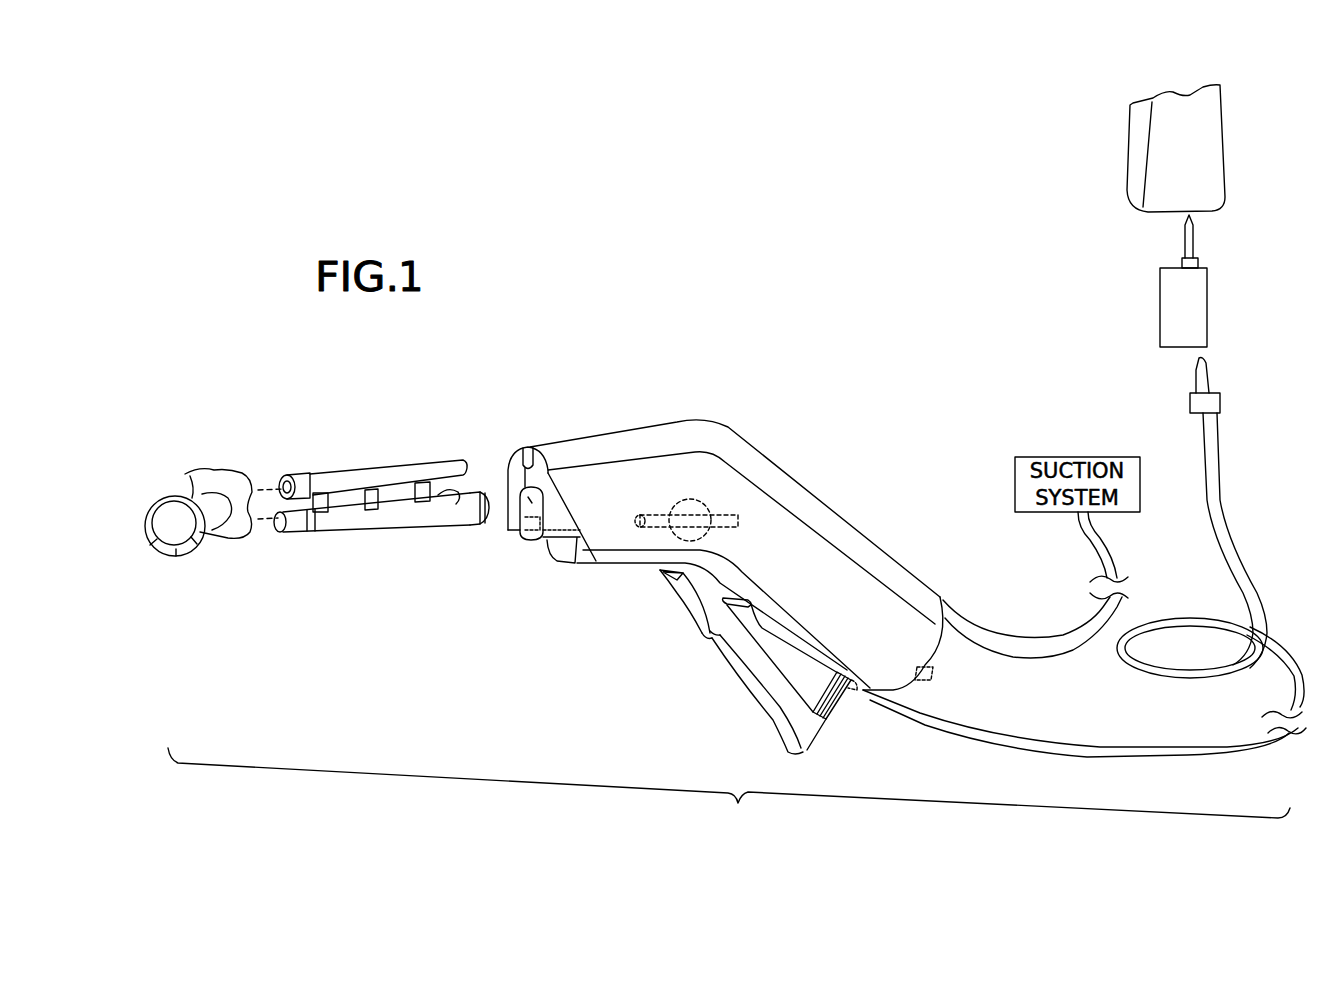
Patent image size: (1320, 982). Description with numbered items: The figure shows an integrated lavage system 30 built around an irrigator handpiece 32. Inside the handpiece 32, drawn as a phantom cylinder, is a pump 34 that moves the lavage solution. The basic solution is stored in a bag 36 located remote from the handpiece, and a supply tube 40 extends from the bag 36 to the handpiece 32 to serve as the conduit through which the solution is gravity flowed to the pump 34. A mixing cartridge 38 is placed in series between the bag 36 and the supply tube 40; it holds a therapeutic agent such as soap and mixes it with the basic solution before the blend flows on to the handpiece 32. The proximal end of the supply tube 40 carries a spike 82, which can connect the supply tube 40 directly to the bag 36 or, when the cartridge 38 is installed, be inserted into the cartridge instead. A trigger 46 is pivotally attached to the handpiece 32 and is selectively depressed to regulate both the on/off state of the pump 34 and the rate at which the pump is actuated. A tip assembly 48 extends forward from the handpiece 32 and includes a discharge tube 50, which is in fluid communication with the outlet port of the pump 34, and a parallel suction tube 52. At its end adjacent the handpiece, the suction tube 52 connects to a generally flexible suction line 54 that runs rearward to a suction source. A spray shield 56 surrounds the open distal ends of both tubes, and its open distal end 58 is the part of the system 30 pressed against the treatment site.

The integrated lavage system 30 is at (729, 793).
The irrigator handpiece 32 is at (604, 496).
The pump 34 is at (686, 520).
The bag 36 is at (1199, 172).
The mixing cartridge 38 is at (1197, 315).
The supply tube 40 is at (1221, 450).
The trigger 46 is at (777, 713).
The tip assembly 48 is at (327, 462).
The discharge tube 50 is at (383, 518).
The suction tube 52 is at (393, 463).
The suction line 54 is at (990, 630).
The spray shield 56 is at (233, 499).
The open distal end 58 is at (204, 546).
The spike 82 is at (1197, 372).